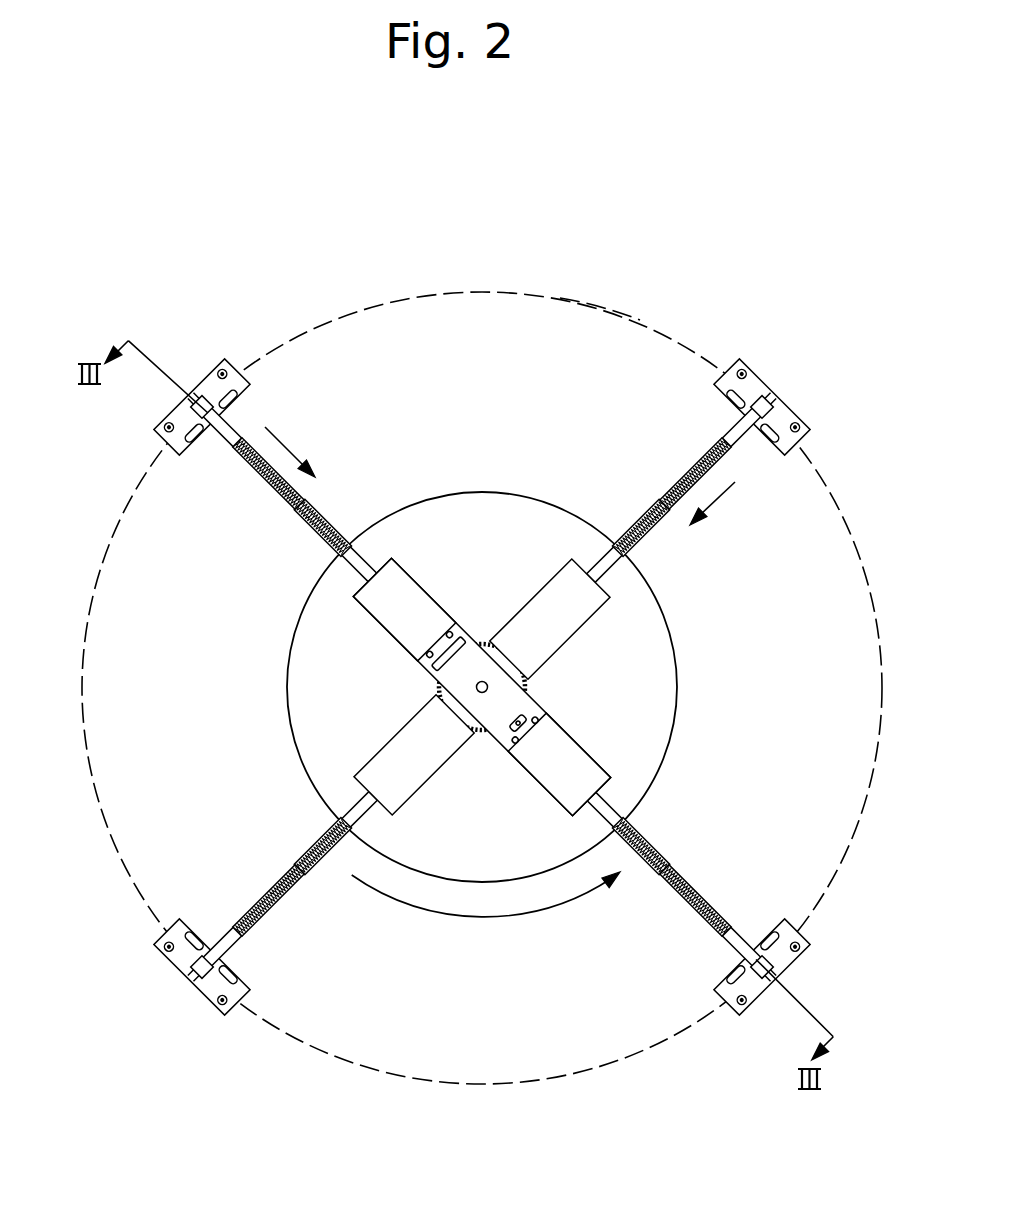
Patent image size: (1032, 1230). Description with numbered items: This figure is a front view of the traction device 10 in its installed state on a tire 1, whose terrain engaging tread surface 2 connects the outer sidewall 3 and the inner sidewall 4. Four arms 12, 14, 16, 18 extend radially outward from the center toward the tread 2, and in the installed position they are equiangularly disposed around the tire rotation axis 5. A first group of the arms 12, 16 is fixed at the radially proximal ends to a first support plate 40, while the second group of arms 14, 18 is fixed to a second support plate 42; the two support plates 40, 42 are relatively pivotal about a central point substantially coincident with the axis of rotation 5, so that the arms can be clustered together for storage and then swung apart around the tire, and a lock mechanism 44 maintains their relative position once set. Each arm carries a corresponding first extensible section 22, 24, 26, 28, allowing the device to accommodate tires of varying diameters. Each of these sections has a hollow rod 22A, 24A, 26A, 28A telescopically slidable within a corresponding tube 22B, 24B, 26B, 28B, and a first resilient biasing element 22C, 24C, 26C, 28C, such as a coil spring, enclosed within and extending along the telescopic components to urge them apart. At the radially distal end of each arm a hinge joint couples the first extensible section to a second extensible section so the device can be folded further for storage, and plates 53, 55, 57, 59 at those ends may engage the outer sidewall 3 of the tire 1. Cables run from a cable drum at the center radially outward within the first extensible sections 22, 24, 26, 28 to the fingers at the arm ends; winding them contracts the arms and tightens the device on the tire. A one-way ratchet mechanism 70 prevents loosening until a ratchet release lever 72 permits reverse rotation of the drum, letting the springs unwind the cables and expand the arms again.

The tire 1 is at (482, 625).
The tread surface 2 is at (530, 295).
The outer sidewall 3 is at (542, 317).
The inner sidewall 4 is at (602, 328).
The axis of rotation 5 is at (482, 681).
The traction device 10 is at (475, 686).
The arm 12 is at (195, 375).
The arm 14 is at (768, 371).
The arm 16 is at (742, 949).
The arm 18 is at (183, 1013).
The first extensible section 22 is at (228, 556).
The hollow rod 22A is at (262, 478).
The tube 22B is at (318, 530).
The first resilient biasing element 22C is at (232, 450).
The first extensible section 24 is at (600, 445).
The hollow rod 24A is at (680, 478).
The tube 24B is at (640, 513).
The first resilient biasing element 24C is at (702, 446).
The first extensible section 26 is at (742, 825).
The hollow rod 26A is at (700, 897).
The tube 26B is at (662, 843).
The first resilient biasing element 26C is at (647, 837).
The first extensible section 28 is at (213, 822).
The hollow rod 28A is at (273, 885).
The tube 28B is at (300, 847).
The first resilient biasing element 28C is at (233, 923).
The first support plate 40 is at (365, 610).
The second support plate 42 is at (376, 752).
The lock mechanism 44 is at (544, 710).
The plate 53 is at (222, 378).
The plate 55 is at (796, 422).
The plate 57 is at (793, 962).
The plate 59 is at (225, 1010).
The one-way ratchet mechanism 70 is at (528, 672).
The ratchet release lever 72 is at (417, 662).